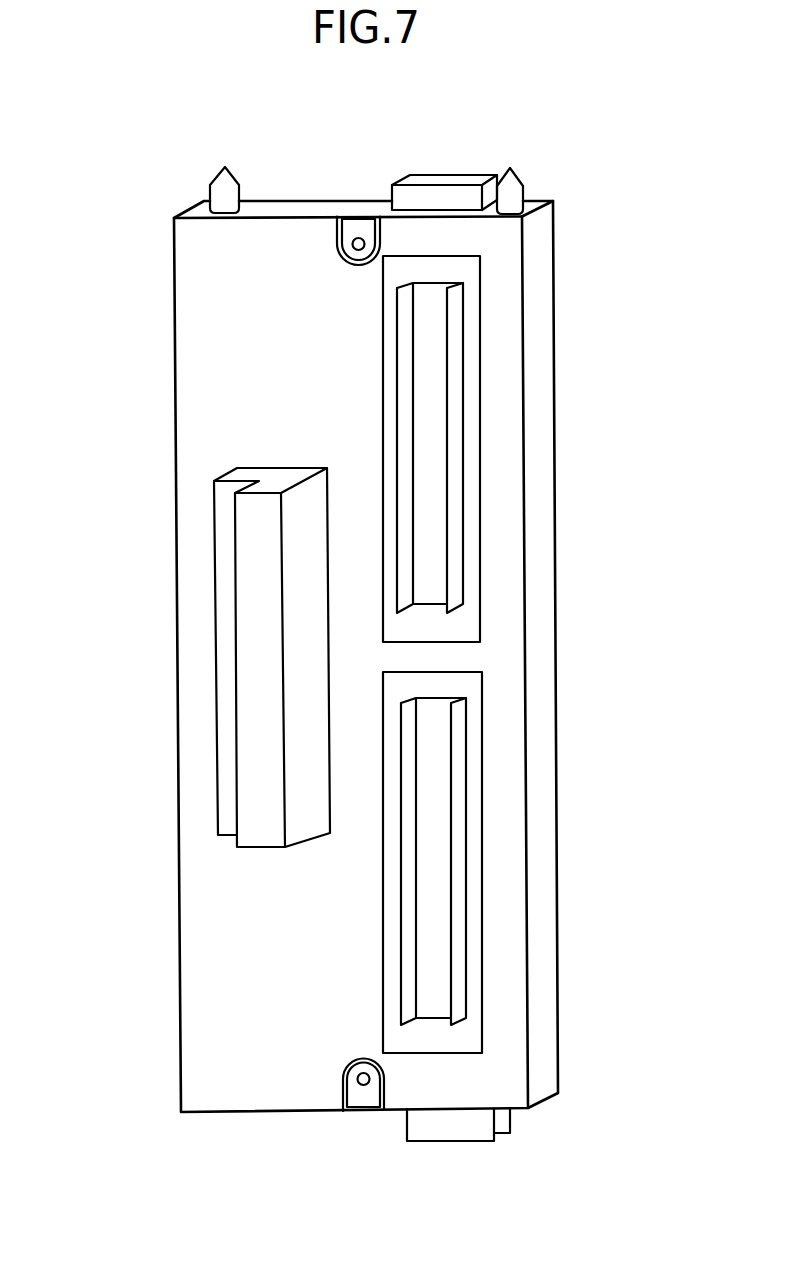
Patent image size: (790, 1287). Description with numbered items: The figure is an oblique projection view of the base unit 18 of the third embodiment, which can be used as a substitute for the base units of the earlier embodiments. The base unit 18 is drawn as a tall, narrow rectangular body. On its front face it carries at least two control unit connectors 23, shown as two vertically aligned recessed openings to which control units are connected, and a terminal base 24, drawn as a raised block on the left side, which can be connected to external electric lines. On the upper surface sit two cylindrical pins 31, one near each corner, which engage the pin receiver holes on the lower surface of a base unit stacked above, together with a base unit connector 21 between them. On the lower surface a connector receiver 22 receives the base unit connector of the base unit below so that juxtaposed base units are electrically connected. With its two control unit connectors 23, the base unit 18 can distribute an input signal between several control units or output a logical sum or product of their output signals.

The base unit 18 is at (541, 596).
The base unit connector 21 is at (440, 177).
The connector receiver 22 is at (445, 1134).
The control unit connector 23 is at (457, 417).
The terminal base 24 is at (223, 623).
The cylindrical pin 31 is at (233, 173).